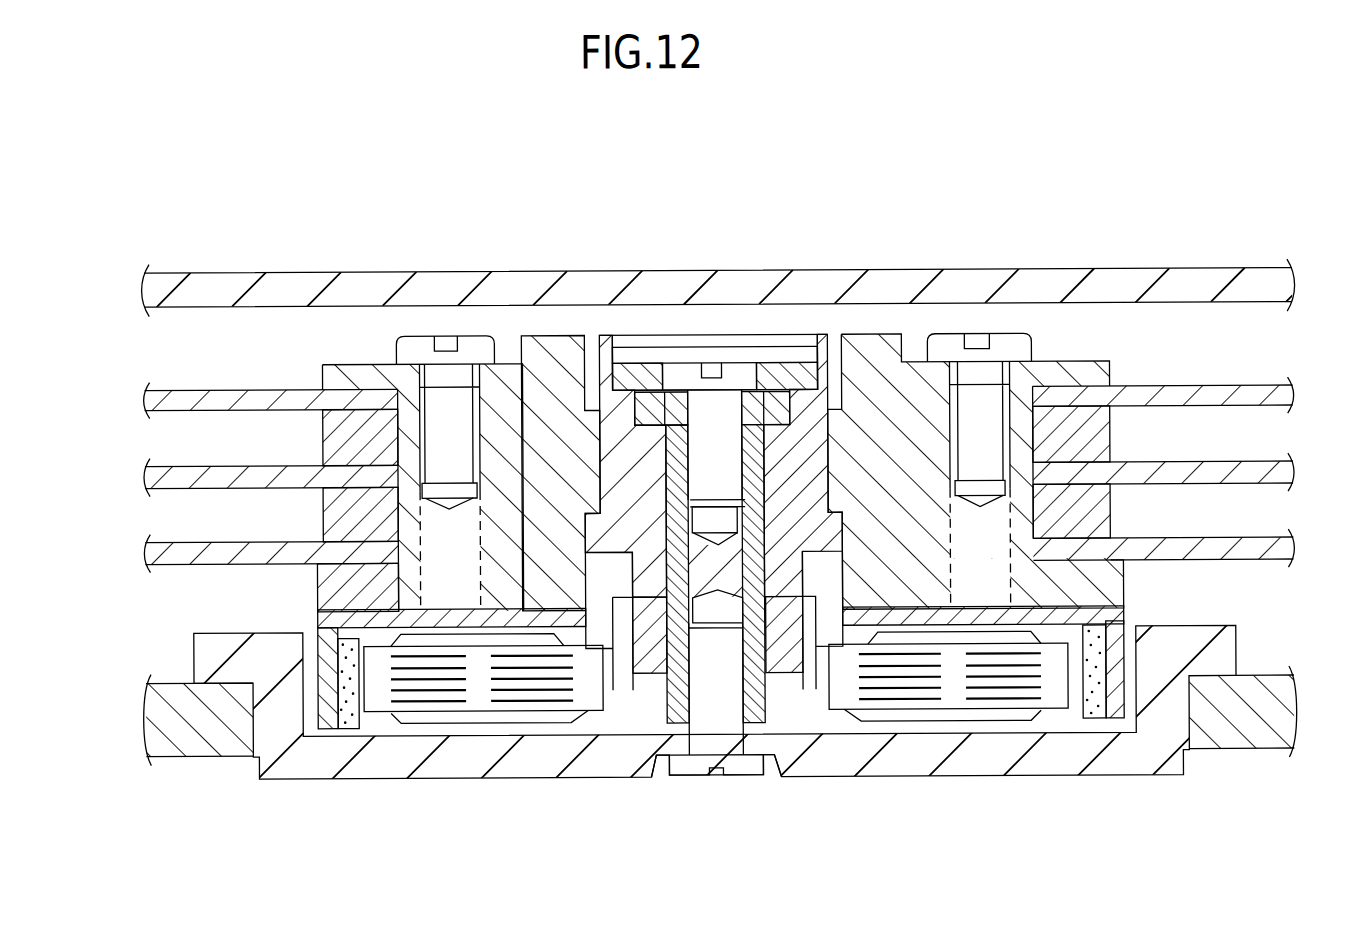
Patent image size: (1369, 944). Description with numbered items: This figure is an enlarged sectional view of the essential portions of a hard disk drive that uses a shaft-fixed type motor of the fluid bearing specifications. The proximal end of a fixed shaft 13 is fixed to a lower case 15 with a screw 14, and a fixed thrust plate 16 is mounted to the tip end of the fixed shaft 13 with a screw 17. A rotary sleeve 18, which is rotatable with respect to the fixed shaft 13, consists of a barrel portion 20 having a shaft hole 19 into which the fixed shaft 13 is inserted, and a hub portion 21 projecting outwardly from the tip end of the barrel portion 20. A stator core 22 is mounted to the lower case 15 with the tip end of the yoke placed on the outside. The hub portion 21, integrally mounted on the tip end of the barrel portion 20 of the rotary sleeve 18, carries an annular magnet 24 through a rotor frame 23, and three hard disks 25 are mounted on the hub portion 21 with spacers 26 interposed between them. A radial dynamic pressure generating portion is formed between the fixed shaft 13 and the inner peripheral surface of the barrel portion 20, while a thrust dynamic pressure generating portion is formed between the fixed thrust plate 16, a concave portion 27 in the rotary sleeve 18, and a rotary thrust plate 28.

The fixed shaft 13 is at (855, 410).
The screw 14 is at (713, 713).
The lower case 15 is at (990, 750).
The fixed thrust plate 16 is at (797, 357).
The screw 17 is at (707, 443).
The rotary sleeve 18 is at (540, 337).
The shaft hole 19 is at (655, 600).
The barrel portion 20 is at (612, 540).
The hub portion 21 is at (868, 570).
The stator core 22 is at (950, 690).
The rotor frame 23 is at (325, 717).
The annular magnet 24 is at (350, 723).
The hard disks 25 is at (207, 400).
The spacers 26 is at (297, 393).
The concave portion 27 is at (637, 363).
The rotary thrust plate 28 is at (775, 368).